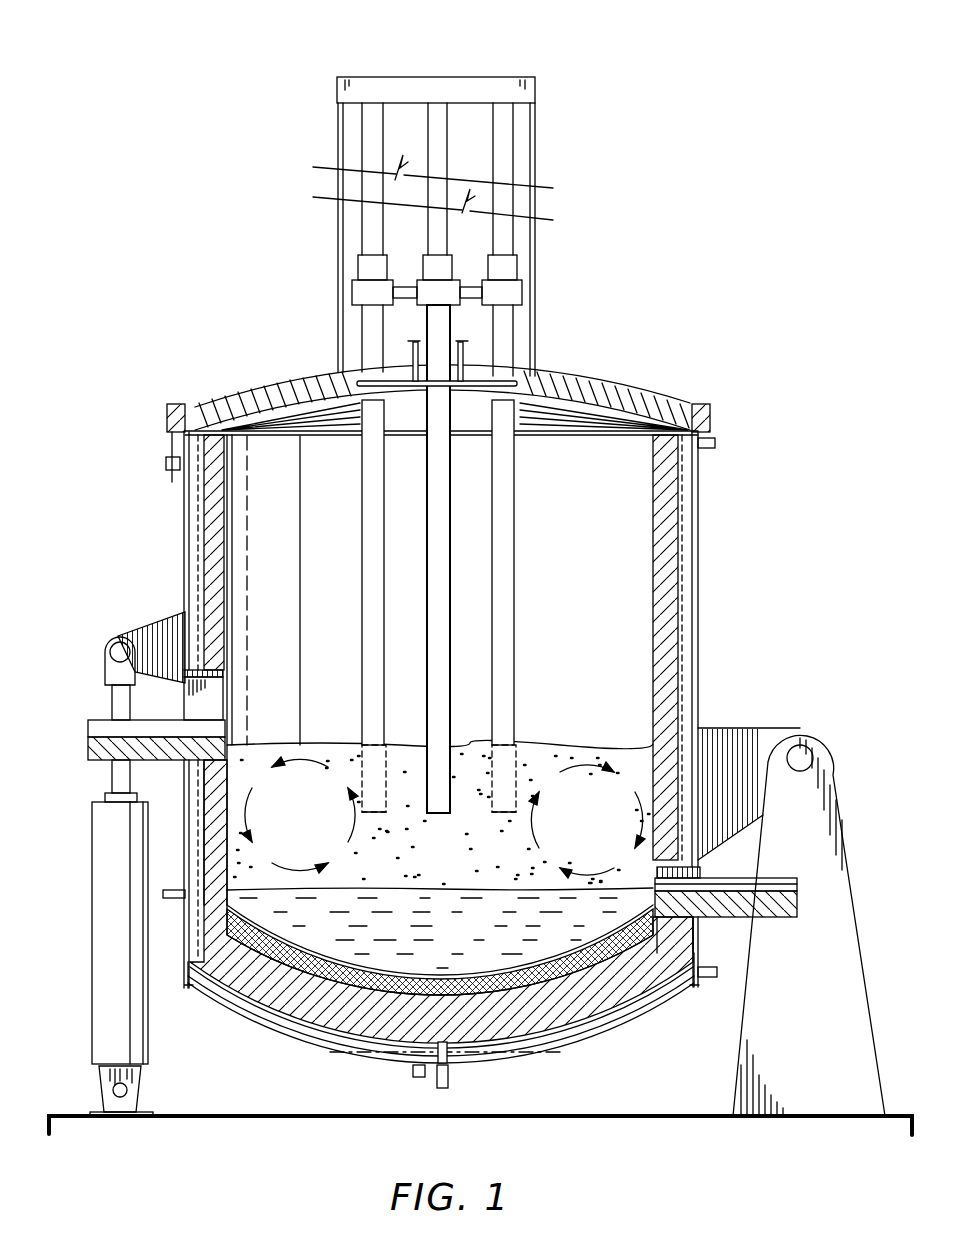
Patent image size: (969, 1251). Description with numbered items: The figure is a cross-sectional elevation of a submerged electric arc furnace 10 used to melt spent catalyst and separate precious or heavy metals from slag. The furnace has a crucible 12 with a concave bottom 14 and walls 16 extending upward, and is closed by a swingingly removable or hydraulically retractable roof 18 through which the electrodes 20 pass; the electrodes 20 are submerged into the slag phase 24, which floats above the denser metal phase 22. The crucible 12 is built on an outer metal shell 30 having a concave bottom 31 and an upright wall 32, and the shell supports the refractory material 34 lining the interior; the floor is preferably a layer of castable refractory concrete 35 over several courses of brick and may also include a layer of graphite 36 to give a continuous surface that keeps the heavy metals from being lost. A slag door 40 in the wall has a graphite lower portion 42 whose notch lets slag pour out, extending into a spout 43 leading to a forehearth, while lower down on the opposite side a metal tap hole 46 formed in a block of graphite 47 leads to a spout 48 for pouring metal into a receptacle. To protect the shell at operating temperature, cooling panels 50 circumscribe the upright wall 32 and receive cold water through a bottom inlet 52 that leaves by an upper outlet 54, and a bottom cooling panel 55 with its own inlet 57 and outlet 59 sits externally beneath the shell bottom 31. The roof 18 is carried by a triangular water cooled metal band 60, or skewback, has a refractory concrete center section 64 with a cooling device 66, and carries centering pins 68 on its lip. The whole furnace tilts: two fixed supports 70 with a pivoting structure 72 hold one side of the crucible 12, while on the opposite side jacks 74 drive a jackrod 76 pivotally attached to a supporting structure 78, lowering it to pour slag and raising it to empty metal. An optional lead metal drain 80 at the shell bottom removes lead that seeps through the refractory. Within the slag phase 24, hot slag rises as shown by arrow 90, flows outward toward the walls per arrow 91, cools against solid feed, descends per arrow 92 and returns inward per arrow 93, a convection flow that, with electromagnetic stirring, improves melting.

The electric arc furnace 10 is at (128, 497).
The crucible 12 is at (666, 662).
The concave bottom 14 is at (566, 1008).
The walls 16 is at (205, 850).
The roof 18 is at (265, 392).
The electrodes 20 is at (478, 85).
The metal phase 22 is at (428, 946).
The slag phase 24 is at (450, 866).
The outer metal shell 30 is at (698, 550).
The concave bottom of metal shell 31 is at (398, 1040).
The upright wall 32 is at (184, 552).
The refractory material 34 is at (335, 1000).
The layer of castable refractory concrete 35 is at (352, 975).
The layer of graphite 36 is at (522, 975).
The slag door 40 is at (212, 704).
The graphite lower portion 42 is at (215, 748).
The spout 43 is at (88, 740).
The metal tap hole 46 is at (700, 879).
The block of graphite 47 is at (663, 919).
The spout 48 is at (733, 916).
The cooling panels 50 is at (195, 597).
The inlet 52 is at (173, 900).
The upper outlet 54 is at (712, 448).
The cooling panel 55 is at (377, 1050).
The inlet 57 is at (419, 1078).
The outlet 59 is at (710, 977).
The water cooled circular metal band 60 is at (167, 416).
The center section 64 is at (462, 386).
The cooling device 66 is at (413, 386).
The centering pins 68 is at (172, 442).
The fixed supports 70 is at (840, 893).
The pivoting structure 72 is at (745, 728).
The jacks 74 is at (92, 983).
The jackrod 76 is at (117, 703).
The supporting structure 78 is at (158, 628).
The lead metal drain 80 is at (450, 1072).
The arrow 90 is at (354, 822).
The arrow 91 is at (300, 763).
The arrow 92 is at (243, 810).
The arrow 93 is at (297, 877).